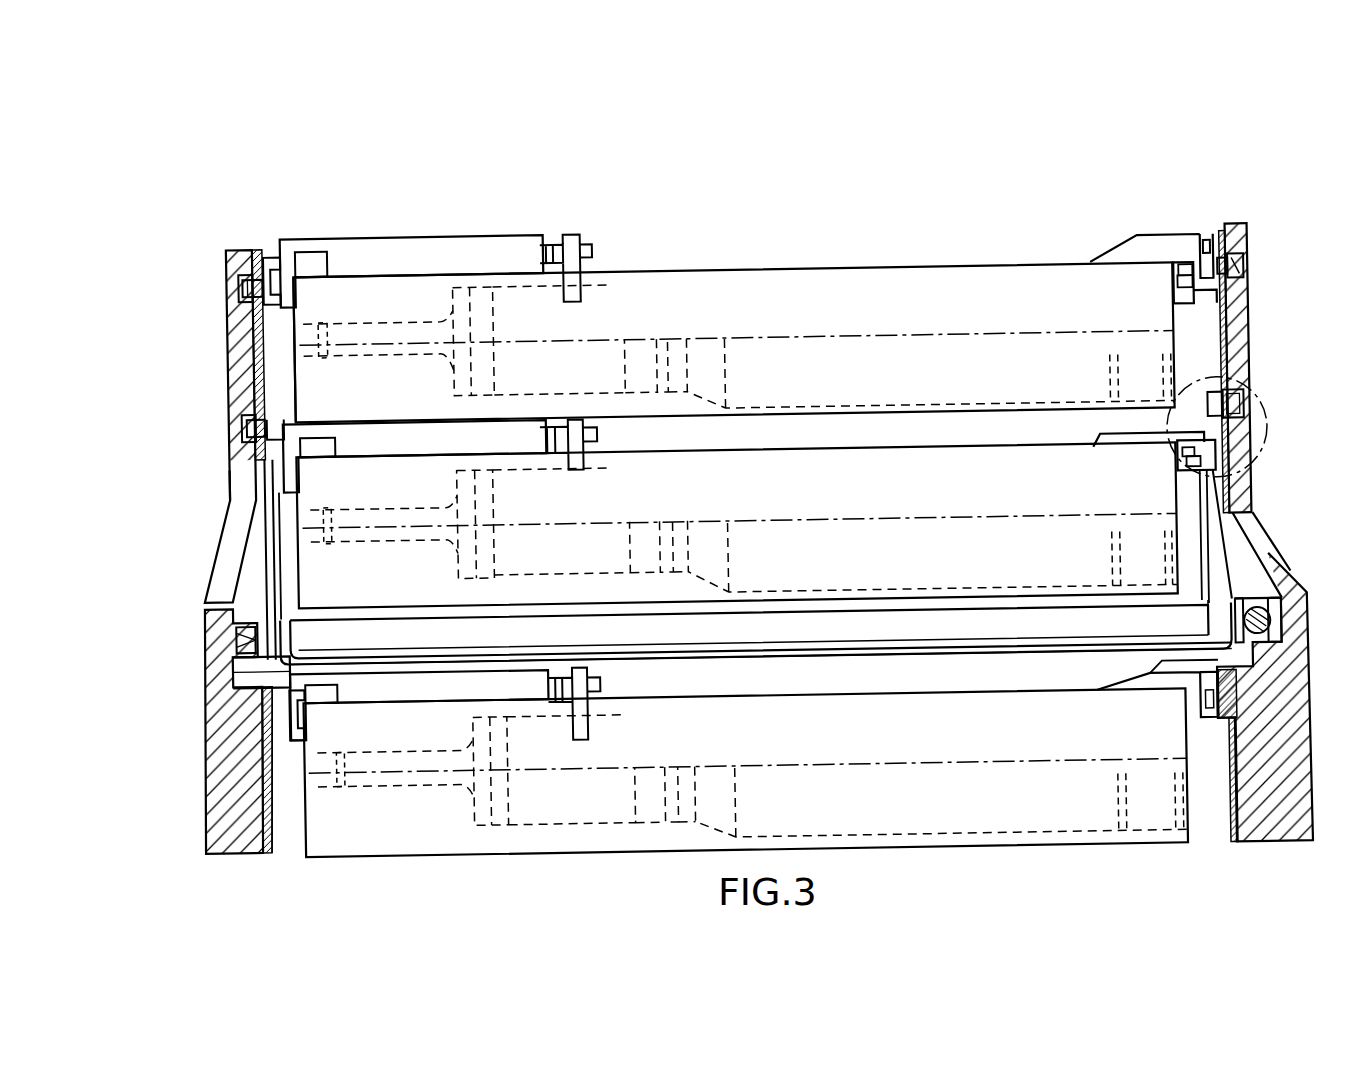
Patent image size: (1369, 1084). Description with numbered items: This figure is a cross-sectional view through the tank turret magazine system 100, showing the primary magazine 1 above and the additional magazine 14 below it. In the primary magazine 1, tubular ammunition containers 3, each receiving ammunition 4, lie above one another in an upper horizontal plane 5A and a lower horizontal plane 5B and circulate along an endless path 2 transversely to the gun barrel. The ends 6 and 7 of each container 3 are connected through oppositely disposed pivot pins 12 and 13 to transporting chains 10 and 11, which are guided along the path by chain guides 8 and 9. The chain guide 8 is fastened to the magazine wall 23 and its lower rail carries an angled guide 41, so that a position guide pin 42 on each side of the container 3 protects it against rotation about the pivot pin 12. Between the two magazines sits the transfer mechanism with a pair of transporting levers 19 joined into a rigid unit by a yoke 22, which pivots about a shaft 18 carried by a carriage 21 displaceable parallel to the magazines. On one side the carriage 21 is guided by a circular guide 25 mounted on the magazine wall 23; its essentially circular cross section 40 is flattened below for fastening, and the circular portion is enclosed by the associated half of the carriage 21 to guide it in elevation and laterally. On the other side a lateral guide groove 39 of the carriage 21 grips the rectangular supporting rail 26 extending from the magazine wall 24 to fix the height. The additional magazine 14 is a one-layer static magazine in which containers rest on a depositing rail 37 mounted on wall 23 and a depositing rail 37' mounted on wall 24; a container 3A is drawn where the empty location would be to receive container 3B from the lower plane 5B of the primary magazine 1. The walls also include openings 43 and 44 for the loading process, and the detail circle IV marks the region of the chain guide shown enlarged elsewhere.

The primary magazine 1 is at (930, 251).
The endless path 2 is at (1243, 268).
The ammunition container 3 is at (721, 266).
The ammunition container at the empty location 3A is at (824, 450).
The ammunition container from the primary magazine 3B is at (467, 850).
The ammunition 4 is at (557, 391).
The upper horizontal plane 5A is at (916, 338).
The lower horizontal plane 5B is at (941, 521).
The container end 6 is at (1181, 370).
The container end 7 is at (302, 317).
The chain guide 8 is at (1232, 241).
The chain guide 9 is at (261, 236).
The transporting chain 10 is at (1247, 279).
The transporting chain 11 is at (246, 276).
The pivot pin 12 is at (1206, 242).
The pivot pin 13 is at (280, 250).
The additional magazine 14 is at (1101, 858).
The shaft 18 is at (1187, 608).
The transporting lever 19 is at (268, 512).
The carriage 21 is at (1173, 690).
The yoke 22 is at (1066, 657).
The magazine wall 23 is at (1275, 843).
The magazine wall 24 is at (219, 691).
The circular guide 25 is at (1279, 607).
The supporting rail 26 is at (235, 632).
The depositing rail 37 is at (1214, 718).
The depositing rail 37' is at (289, 769).
The lateral guide groove 39 is at (220, 646).
The circular cross section 40 is at (1254, 615).
The angled guide 41 is at (1191, 291).
The position guide pin 42 is at (1183, 280).
The opening 43 is at (1248, 509).
The opening 44 is at (234, 474).
The tank turret magazine system 100 is at (1309, 351).
The detail circle IV is at (1267, 435).